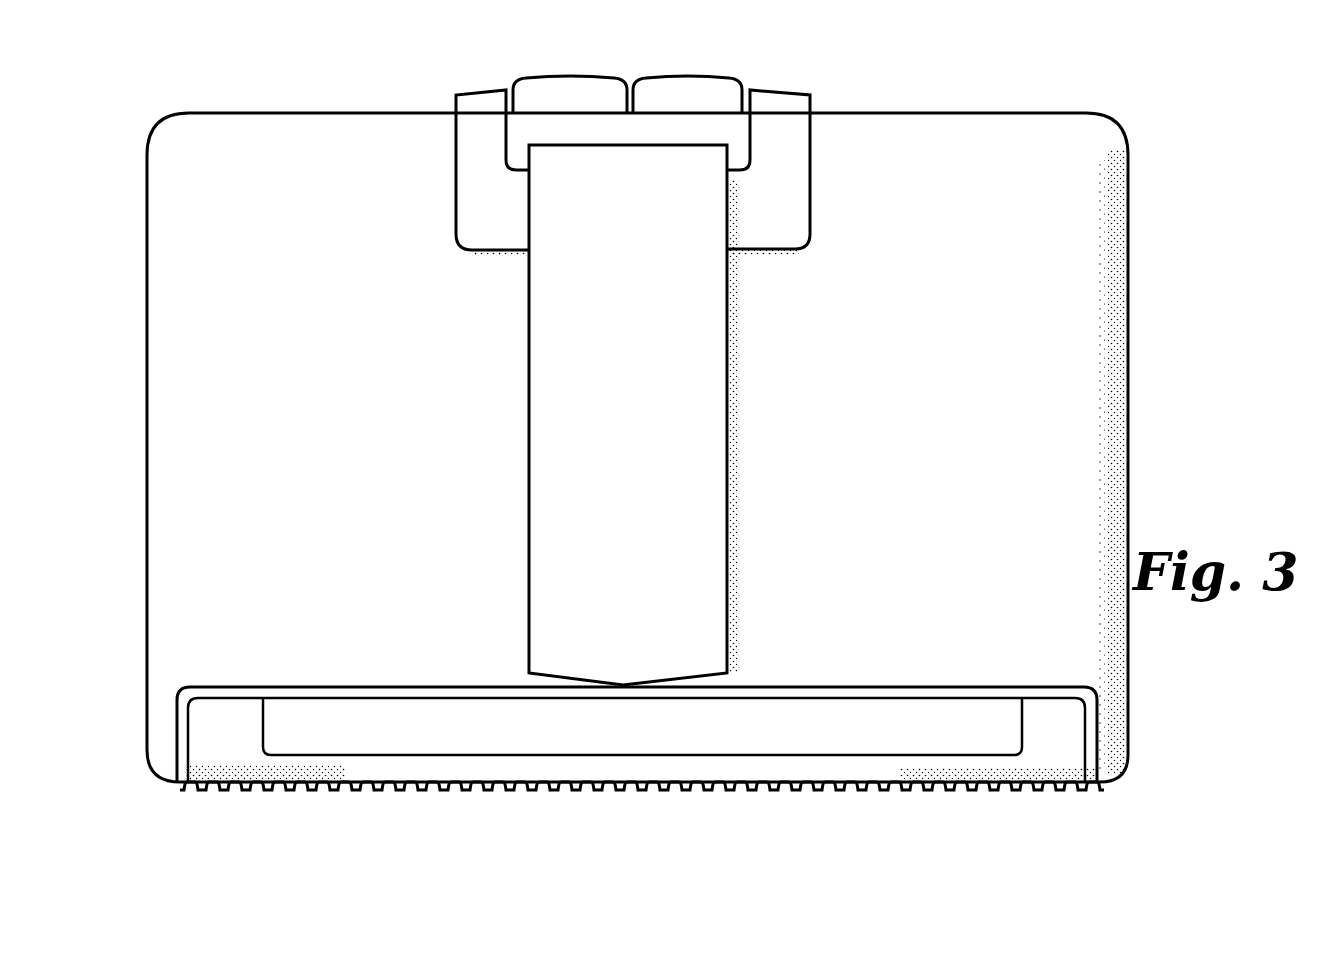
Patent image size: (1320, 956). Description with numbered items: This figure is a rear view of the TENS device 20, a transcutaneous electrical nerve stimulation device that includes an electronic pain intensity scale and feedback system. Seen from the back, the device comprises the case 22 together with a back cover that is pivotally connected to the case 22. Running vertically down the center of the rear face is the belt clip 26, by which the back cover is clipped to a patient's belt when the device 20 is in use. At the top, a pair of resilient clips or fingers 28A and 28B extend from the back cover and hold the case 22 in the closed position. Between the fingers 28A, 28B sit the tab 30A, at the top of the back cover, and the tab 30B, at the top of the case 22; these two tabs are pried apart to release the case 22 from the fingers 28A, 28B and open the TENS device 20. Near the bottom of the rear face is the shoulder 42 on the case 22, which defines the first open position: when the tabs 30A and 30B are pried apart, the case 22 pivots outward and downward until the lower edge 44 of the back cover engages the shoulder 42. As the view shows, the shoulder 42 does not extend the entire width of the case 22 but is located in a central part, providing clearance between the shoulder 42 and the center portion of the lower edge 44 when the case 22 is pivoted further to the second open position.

The TENS device 20 is at (1142, 108).
The case 22 is at (1142, 200).
The belt clip 26 is at (642, 447).
The resilient finger 28A is at (795, 95).
The resilient finger 28B is at (478, 103).
The tab 30A is at (697, 60).
The tab 30B is at (577, 55).
The shoulder 42 is at (508, 762).
The lower edge 44 is at (742, 686).